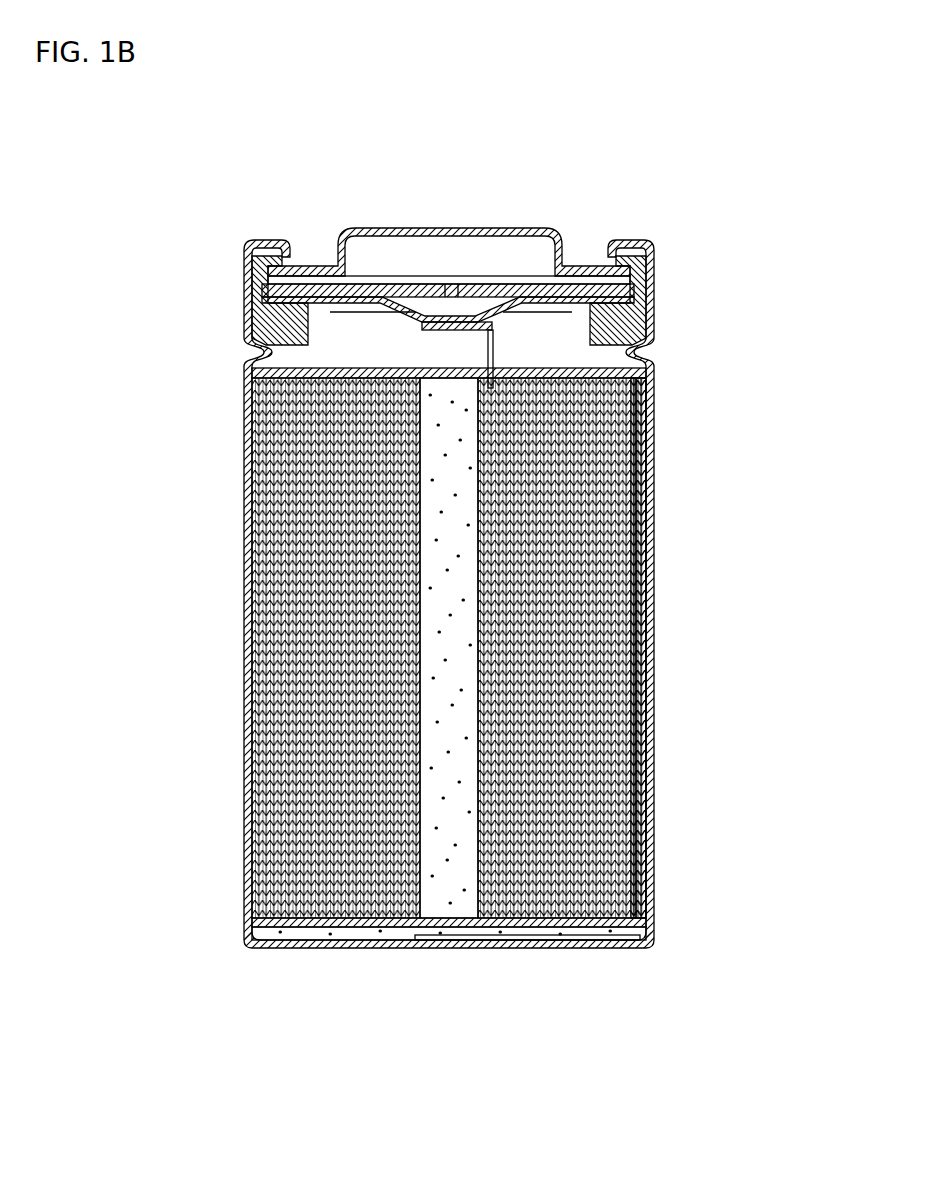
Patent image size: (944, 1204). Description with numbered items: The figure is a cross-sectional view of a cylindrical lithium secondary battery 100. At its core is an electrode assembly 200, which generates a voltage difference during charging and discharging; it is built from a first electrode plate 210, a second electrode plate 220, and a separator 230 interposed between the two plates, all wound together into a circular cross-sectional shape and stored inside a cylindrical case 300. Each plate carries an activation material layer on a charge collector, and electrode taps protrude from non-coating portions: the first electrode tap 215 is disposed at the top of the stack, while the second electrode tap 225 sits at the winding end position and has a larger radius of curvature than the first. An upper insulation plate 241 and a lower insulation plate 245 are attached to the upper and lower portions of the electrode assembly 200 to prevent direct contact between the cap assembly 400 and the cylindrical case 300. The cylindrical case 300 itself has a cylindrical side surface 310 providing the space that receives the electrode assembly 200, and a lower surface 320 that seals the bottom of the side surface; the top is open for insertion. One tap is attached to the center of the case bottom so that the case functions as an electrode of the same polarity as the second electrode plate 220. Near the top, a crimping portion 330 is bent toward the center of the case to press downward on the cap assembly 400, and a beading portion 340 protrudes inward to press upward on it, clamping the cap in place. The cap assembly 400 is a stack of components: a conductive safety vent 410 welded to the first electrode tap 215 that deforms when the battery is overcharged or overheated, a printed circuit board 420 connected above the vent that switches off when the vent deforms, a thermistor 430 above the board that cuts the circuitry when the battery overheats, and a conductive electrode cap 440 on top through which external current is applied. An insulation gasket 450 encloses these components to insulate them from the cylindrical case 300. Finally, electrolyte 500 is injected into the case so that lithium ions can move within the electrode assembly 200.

The cylindrical lithium secondary battery 100 is at (687, 204).
The electrode assembly 200 is at (782, 352).
The first electrode plate 210 is at (628, 512).
The first electrode tap 215 is at (493, 334).
The second electrode plate 220 is at (648, 419).
The second electrode tap 225 is at (545, 946).
The separator 230 is at (648, 466).
The upper insulation plate 241 is at (650, 373).
The lower insulation plate 245 is at (648, 946).
The cylindrical case 300 is at (118, 314).
The cylindrical side surface 310 is at (244, 416).
The lower surface 320 is at (275, 960).
The crimping portion 330 is at (245, 245).
The beading portion 340 is at (258, 350).
The cap assembly 400 is at (600, 135).
The conductive safety vent 410 is at (420, 322).
The printed circuit board 420 is at (483, 300).
The thermistor 430 is at (530, 286).
The conductive electrode cap 440 is at (367, 228).
The insulation gasket 450 is at (625, 245).
The electrolyte 500 is at (440, 907).